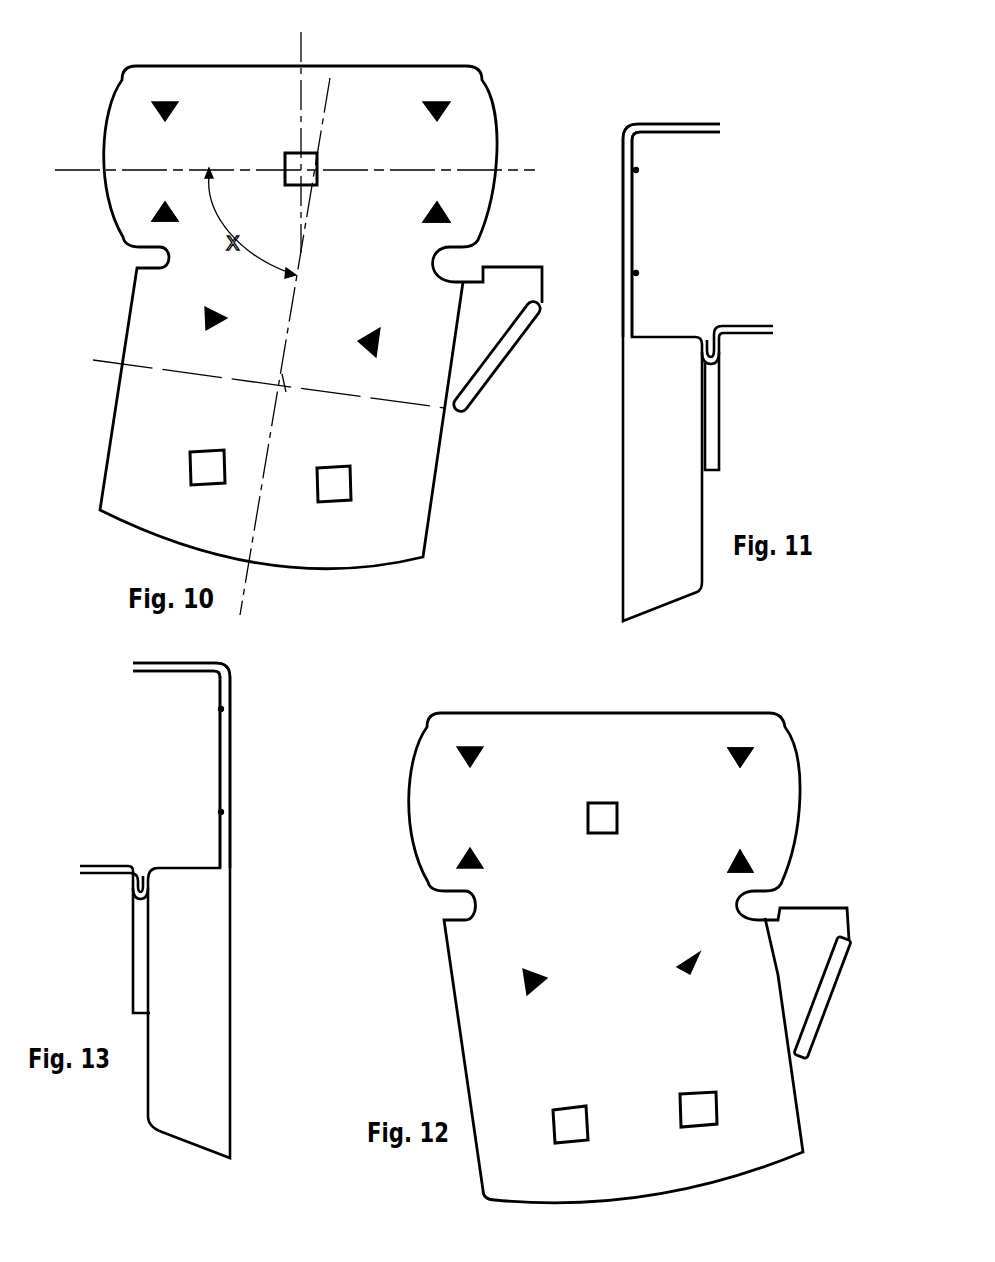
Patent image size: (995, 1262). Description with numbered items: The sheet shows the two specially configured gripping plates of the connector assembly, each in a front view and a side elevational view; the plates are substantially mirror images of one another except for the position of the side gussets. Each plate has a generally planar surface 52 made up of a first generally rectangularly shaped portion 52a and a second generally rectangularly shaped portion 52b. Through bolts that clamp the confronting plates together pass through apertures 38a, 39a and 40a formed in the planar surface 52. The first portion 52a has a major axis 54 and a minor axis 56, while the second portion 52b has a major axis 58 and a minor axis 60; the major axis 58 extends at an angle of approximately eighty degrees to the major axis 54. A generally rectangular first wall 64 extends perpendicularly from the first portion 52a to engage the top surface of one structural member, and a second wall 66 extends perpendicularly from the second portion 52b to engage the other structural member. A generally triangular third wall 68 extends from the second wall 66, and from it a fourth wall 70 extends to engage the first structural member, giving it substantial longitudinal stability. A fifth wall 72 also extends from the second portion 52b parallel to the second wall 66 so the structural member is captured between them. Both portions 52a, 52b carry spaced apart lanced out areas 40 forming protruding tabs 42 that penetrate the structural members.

In FIG. 10, the aperture 38a is at (316, 187).
In FIG. 12, the aperture 38a is at (597, 820).
In FIG. 10, the aperture 39a is at (212, 450).
In FIG. 12, the aperture 39a is at (563, 1110).
In FIG. 10, the aperture 40a is at (337, 500).
In FIG. 12, the aperture 40a is at (697, 1107).
In FIG. 10, the lanced out area 40 is at (176, 222).
In FIG. 12, the lanced out area 40 is at (743, 767).
In FIG. 10, the protruding tab 42 is at (176, 110).
In FIG. 11, the protruding tab 42 is at (637, 170).
In FIG. 13, the protruding tab 42 is at (219, 710).
In FIG. 12, the protruding tab 42 is at (483, 750).
In FIG. 10, the planar surface 52 is at (302, 317).
In FIG. 11, the planar surface 52 is at (626, 372).
In FIG. 13, the planar surface 52 is at (210, 910).
In FIG. 12, the planar surface 52 is at (603, 958).
In FIG. 10, the first generally rectangularly shaped portion 52a is at (323, 184).
In FIG. 12, the first generally rectangularly shaped portion 52a is at (629, 826).
In FIG. 10, the second generally rectangularly shaped portion 52b is at (100, 264).
In FIG. 12, the second generally rectangularly shaped portion 52b is at (623, 1047).
In FIG. 10, the major axis 54 is at (517, 167).
In FIG. 10, the minor axis 56 is at (298, 50).
In FIG. 10, the major axis 58 is at (298, 318).
In FIG. 10, the minor axis 60 is at (107, 362).
In FIG. 11, the first wall 64 is at (677, 124).
In FIG. 13, the first wall 64 is at (177, 661).
In FIG. 11, the second wall 66 is at (650, 473).
In FIG. 10, the third wall 68 is at (488, 310).
In FIG. 12, the third wall 68 is at (807, 957).
In FIG. 11, the fourth wall 70 is at (753, 324).
In FIG. 13, the fourth wall 70 is at (102, 866).
In FIG. 13, the fifth wall 72 is at (200, 952).